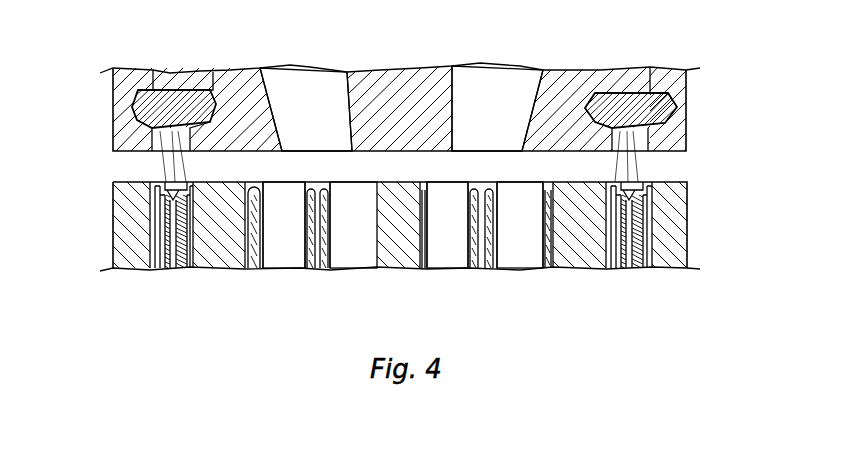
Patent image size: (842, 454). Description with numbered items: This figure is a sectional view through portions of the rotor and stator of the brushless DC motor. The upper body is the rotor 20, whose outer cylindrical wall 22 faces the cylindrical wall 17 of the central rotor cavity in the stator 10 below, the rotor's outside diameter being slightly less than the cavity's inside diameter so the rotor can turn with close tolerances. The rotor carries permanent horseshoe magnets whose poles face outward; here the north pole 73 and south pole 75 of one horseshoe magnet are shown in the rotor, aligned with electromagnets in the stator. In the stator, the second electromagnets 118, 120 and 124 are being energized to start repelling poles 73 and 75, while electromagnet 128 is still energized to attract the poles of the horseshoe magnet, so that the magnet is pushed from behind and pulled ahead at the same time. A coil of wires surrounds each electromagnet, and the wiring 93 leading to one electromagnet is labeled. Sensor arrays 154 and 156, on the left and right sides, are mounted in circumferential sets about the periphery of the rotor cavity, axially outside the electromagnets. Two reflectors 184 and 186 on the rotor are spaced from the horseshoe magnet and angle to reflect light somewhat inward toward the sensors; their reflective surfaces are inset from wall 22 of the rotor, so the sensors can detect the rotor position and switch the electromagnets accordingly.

The stator 10 is at (692, 240).
The cylindrical wall 17 is at (670, 182).
The rotor 20 is at (692, 109).
The outer cylindrical wall 22 is at (126, 157).
The north pole 73 is at (309, 102).
The south pole 75 is at (491, 102).
The wiring 93 is at (549, 257).
The second electromagnet 118 is at (276, 265).
The second electromagnet 120 is at (352, 265).
The second electromagnet 124 is at (437, 265).
The electromagnet 128 is at (520, 265).
The sensor array 154 is at (160, 263).
The sensor array 156 is at (645, 263).
The reflector 184 is at (178, 100).
The reflector 186 is at (605, 100).